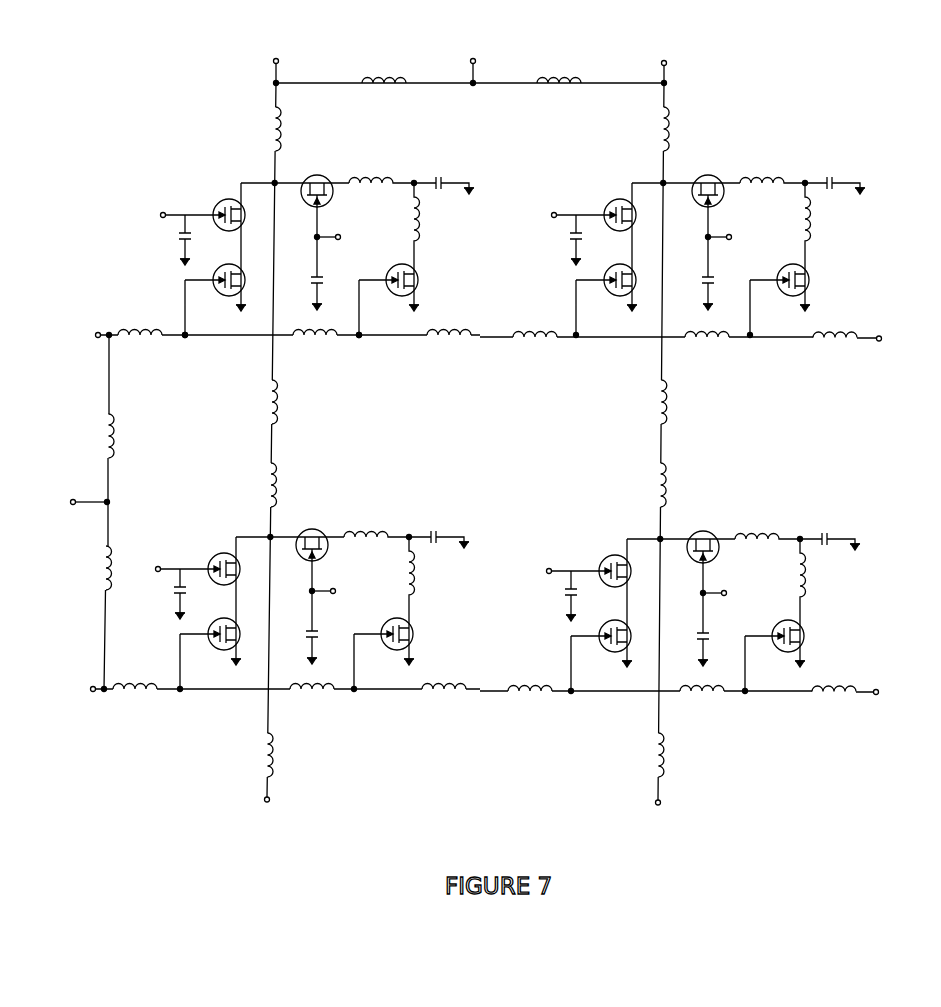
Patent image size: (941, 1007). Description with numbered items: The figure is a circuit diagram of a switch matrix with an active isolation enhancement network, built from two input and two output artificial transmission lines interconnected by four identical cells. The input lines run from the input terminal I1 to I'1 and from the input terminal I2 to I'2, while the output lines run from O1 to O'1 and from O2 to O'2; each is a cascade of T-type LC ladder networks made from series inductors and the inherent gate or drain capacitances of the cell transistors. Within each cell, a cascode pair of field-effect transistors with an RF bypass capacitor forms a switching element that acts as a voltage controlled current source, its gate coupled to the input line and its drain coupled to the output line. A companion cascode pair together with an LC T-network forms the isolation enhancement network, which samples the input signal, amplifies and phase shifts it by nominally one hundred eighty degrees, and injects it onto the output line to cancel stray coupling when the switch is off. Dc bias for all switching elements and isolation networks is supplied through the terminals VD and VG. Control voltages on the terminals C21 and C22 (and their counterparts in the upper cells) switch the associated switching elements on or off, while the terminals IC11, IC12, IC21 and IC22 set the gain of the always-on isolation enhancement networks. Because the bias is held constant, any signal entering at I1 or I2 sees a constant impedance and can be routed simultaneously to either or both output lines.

The control terminal C21 is at (173, 569).
The control terminal C22 is at (564, 571).
The control terminal IC11 is at (356, 245).
The control terminal IC12 is at (747, 245).
The control terminal IC21 is at (351, 599).
The control terminal IC22 is at (742, 601).
The output transmission line terminal O'1 is at (288, 56).
The output transmission line terminal O'2 is at (680, 58).
The output transmission line terminal O1 is at (274, 827).
The output transmission line terminal O2 is at (661, 832).
The input terminal I1 is at (89, 340).
The input terminal I2 is at (84, 697).
The input transmission line terminal I'1 is at (897, 343).
The input transmission line terminal I'2 is at (895, 701).
The drain bias terminal VD is at (478, 55).
The gate bias terminal VG is at (72, 512).